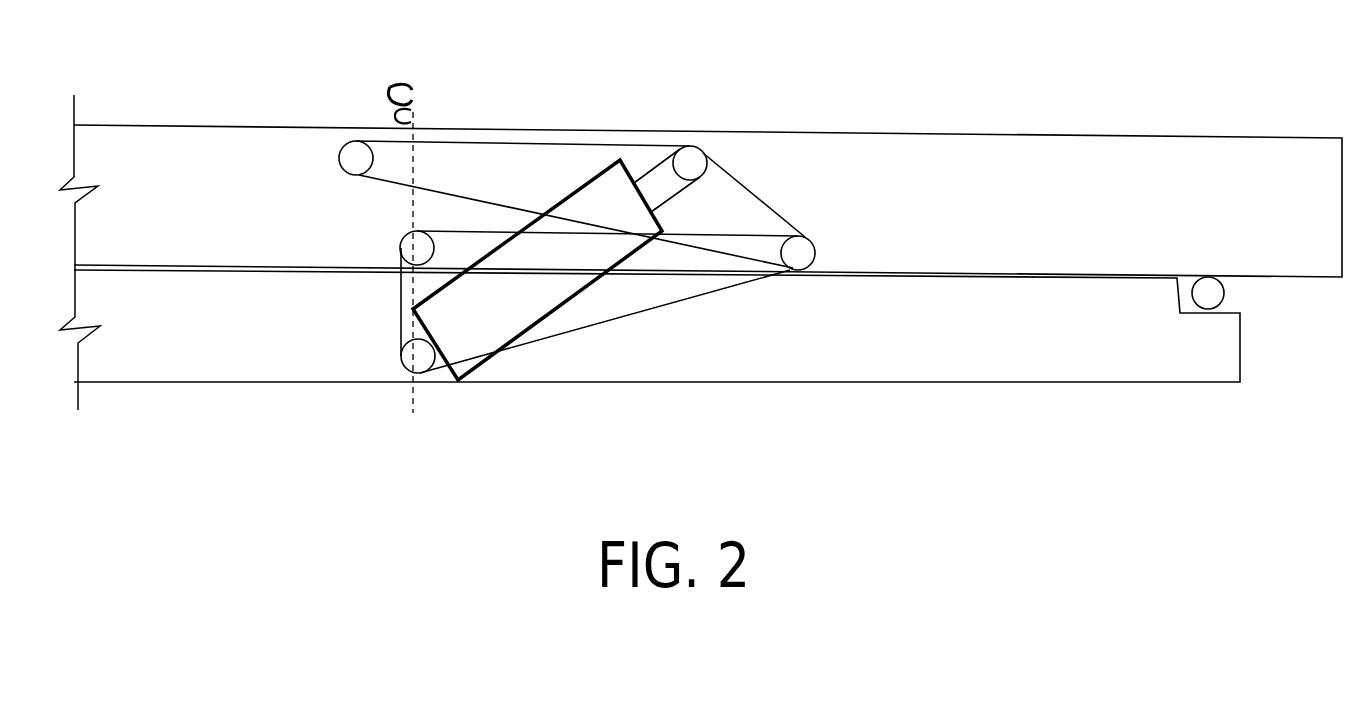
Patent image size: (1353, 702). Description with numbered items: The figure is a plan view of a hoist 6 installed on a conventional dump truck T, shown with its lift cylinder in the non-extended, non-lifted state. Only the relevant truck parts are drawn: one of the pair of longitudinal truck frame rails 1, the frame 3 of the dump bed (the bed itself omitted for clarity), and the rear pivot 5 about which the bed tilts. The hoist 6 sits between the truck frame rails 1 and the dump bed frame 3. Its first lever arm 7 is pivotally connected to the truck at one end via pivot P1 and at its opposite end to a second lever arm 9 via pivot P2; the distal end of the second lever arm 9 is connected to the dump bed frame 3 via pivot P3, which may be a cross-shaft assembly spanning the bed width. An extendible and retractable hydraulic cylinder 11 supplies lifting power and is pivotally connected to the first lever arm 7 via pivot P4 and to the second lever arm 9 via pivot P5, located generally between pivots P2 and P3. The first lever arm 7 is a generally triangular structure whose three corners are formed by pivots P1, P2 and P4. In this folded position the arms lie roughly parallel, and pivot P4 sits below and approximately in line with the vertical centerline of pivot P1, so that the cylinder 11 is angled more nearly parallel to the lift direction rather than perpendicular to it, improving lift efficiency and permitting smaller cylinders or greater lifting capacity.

The truck frame rails 1 is at (870, 348).
The dump bed frame 3 is at (892, 152).
The rear pivot 5 is at (1218, 292).
The hoist 6 is at (347, 245).
The first lever arm 7 is at (613, 300).
The second lever arm 9 is at (463, 155).
The hydraulic cylinder 11 is at (487, 368).
The pivot P1 is at (405, 258).
The pivot P2 is at (803, 247).
The pivot P3 is at (340, 158).
The pivot P4 is at (403, 372).
The pivot P5 is at (697, 147).
The dump truck T is at (1033, 113).